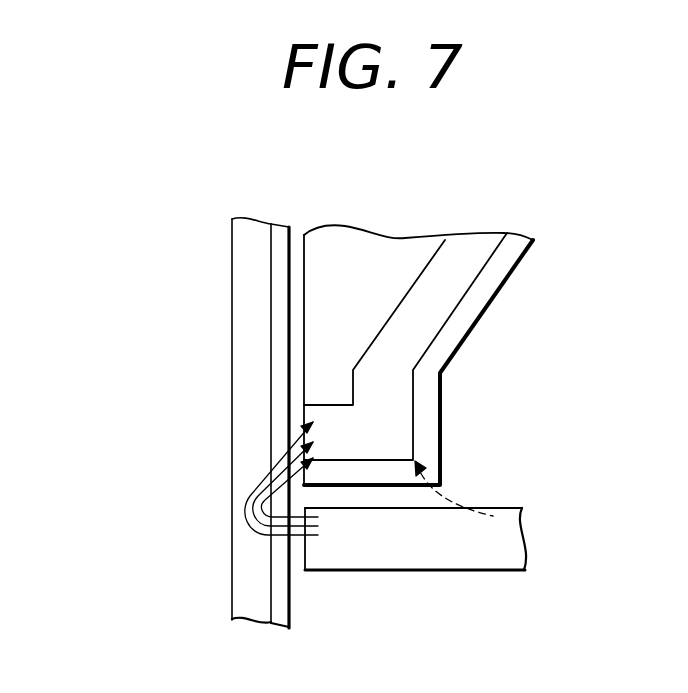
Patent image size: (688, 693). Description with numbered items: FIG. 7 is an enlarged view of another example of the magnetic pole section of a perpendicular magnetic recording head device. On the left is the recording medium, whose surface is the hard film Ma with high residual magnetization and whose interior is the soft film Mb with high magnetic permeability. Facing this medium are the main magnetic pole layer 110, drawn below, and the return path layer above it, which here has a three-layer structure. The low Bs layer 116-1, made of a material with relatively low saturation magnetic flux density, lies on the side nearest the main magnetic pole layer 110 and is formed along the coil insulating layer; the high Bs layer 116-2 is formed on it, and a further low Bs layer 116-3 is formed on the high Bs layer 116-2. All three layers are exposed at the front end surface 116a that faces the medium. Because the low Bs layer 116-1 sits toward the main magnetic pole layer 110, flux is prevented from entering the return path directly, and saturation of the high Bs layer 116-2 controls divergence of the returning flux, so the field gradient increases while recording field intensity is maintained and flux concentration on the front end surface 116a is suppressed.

The soft film Mb is at (247, 243).
The hard film Ma is at (282, 228).
The front end surface 116a is at (305, 258).
The low Bs layer 116-1 is at (480, 292).
The high Bs layer 116-2 is at (472, 243).
The low Bs layer 116-3 is at (368, 240).
The main magnetic pole layer 110 is at (512, 542).